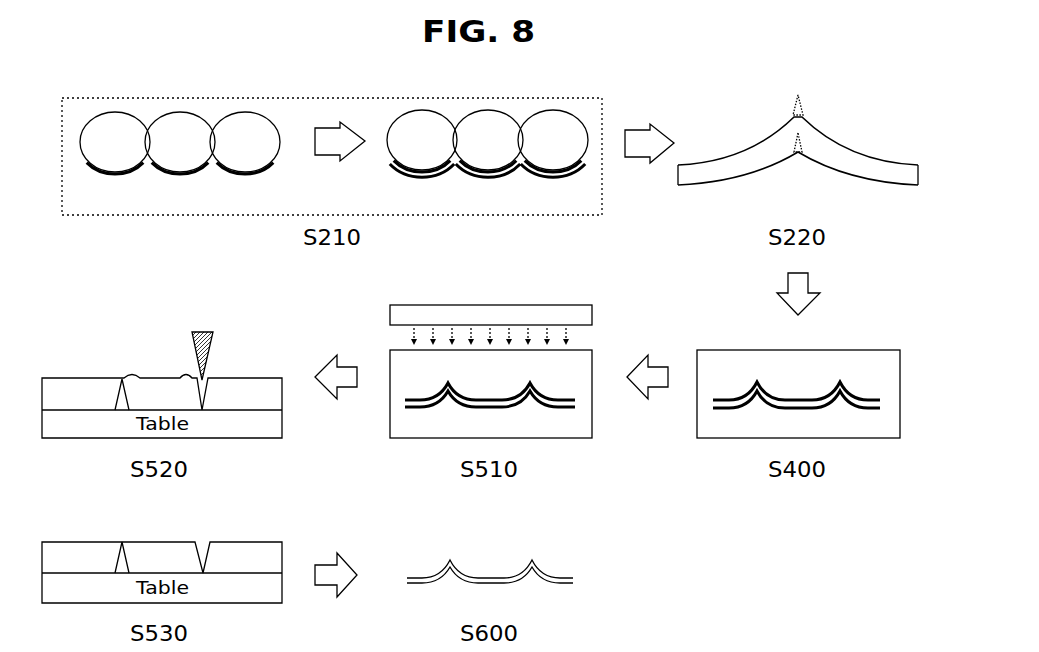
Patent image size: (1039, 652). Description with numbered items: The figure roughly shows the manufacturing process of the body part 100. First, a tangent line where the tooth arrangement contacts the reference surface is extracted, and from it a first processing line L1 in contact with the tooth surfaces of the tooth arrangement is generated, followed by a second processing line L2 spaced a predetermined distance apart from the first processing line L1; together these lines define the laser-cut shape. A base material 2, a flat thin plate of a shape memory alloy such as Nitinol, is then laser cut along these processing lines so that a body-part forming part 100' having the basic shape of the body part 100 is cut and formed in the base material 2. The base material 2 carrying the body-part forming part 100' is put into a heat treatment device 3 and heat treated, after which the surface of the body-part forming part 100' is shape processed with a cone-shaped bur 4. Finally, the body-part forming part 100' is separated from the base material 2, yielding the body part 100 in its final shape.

The first processing line L1 is at (165, 170).
The second processing line L2 is at (412, 178).
The base material 2 is at (704, 338).
The heat treatment device 3 is at (586, 296).
The cone-shaped bur 4 is at (204, 318).
The body-part forming part 100' is at (486, 443).
The body part 100 is at (519, 547).